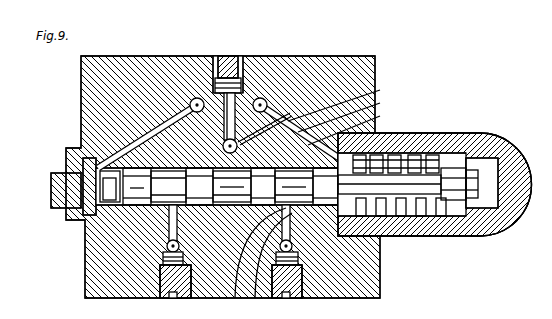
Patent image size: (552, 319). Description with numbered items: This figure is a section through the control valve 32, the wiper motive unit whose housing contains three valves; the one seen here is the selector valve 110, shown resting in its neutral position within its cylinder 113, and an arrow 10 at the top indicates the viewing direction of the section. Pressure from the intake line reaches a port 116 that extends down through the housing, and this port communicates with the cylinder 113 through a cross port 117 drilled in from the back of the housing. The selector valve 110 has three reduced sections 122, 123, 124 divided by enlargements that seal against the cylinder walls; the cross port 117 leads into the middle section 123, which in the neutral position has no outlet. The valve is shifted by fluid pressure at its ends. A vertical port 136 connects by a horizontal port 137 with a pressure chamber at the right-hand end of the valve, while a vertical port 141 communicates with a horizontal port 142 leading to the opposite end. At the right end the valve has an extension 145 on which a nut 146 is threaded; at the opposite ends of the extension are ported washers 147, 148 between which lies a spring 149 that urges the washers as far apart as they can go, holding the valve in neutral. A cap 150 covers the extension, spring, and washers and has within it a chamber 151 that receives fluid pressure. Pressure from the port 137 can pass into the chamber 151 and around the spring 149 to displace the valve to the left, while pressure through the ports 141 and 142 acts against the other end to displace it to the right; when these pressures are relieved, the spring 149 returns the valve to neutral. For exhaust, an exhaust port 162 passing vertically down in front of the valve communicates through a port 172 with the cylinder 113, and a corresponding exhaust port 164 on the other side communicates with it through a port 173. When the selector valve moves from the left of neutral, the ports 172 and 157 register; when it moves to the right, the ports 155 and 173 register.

The direction arrow 10 is at (268, 9).
The control valve 32 is at (73, 72).
The selector valve 110 is at (92, 157).
The cylinder 113 is at (75, 202).
The port 116 is at (372, 82).
The cross port 117 is at (372, 108).
The reduced section 122 is at (152, 200).
The reduced section 123 is at (222, 184).
The reduced section 124 is at (301, 188).
The vertical port 136 is at (255, 90).
The horizontal port 137 is at (372, 95).
The vertical port 141 is at (189, 90).
The horizontal port 142 is at (138, 125).
The extension 145 is at (402, 212).
The nut 146 is at (452, 152).
The ported washer 147 is at (373, 232).
The ported washer 148 is at (440, 214).
The spring 149 is at (408, 212).
The cap 150 is at (487, 222).
The chamber 151 is at (476, 152).
The port 155 is at (192, 142).
The port 157 is at (283, 147).
The exhaust port 162 is at (266, 262).
The exhaust port 164 is at (156, 256).
The port 172 is at (227, 290).
The port 173 is at (162, 238).